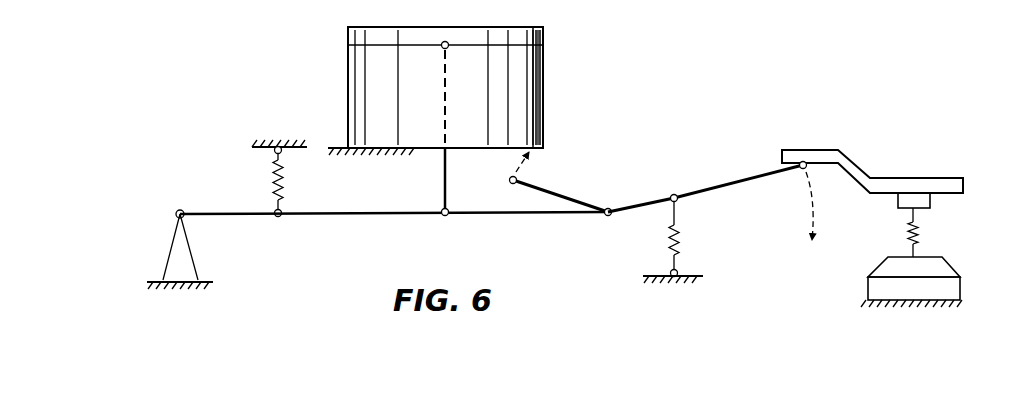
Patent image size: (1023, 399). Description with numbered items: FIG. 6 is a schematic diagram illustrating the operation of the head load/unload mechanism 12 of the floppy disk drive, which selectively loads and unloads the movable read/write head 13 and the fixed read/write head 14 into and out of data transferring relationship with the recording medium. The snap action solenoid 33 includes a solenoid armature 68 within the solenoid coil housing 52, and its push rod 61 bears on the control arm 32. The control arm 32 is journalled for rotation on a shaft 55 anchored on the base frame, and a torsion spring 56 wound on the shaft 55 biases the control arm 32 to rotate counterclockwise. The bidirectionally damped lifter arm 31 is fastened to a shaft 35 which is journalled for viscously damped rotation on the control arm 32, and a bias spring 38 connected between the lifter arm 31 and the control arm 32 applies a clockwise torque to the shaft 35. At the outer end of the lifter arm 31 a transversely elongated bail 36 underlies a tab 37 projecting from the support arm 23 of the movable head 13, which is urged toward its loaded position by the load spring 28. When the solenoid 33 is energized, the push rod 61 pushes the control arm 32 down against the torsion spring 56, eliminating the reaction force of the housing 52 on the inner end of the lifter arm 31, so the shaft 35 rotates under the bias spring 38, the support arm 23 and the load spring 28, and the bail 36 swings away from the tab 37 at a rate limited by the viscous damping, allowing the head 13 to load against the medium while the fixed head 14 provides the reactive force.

The head load/unload mechanism 12 is at (630, 95).
The movable read/write head 13 is at (931, 202).
The fixed read/write head 14 is at (878, 267).
The support arm 23 is at (867, 155).
The load spring 28 is at (909, 233).
The lifter arm 31 is at (713, 186).
The control arm 32 is at (355, 216).
The snap action solenoid 33 is at (430, 77).
The shaft 35 is at (606, 218).
The bail 36 is at (801, 172).
The tab 37 is at (802, 148).
The bias spring 38 is at (680, 237).
The solenoid coil housing 52 is at (538, 80).
The shaft 55 is at (180, 210).
The torsion spring 56 is at (273, 185).
The push rod 61 is at (443, 183).
The solenoid armature 68 is at (413, 30).